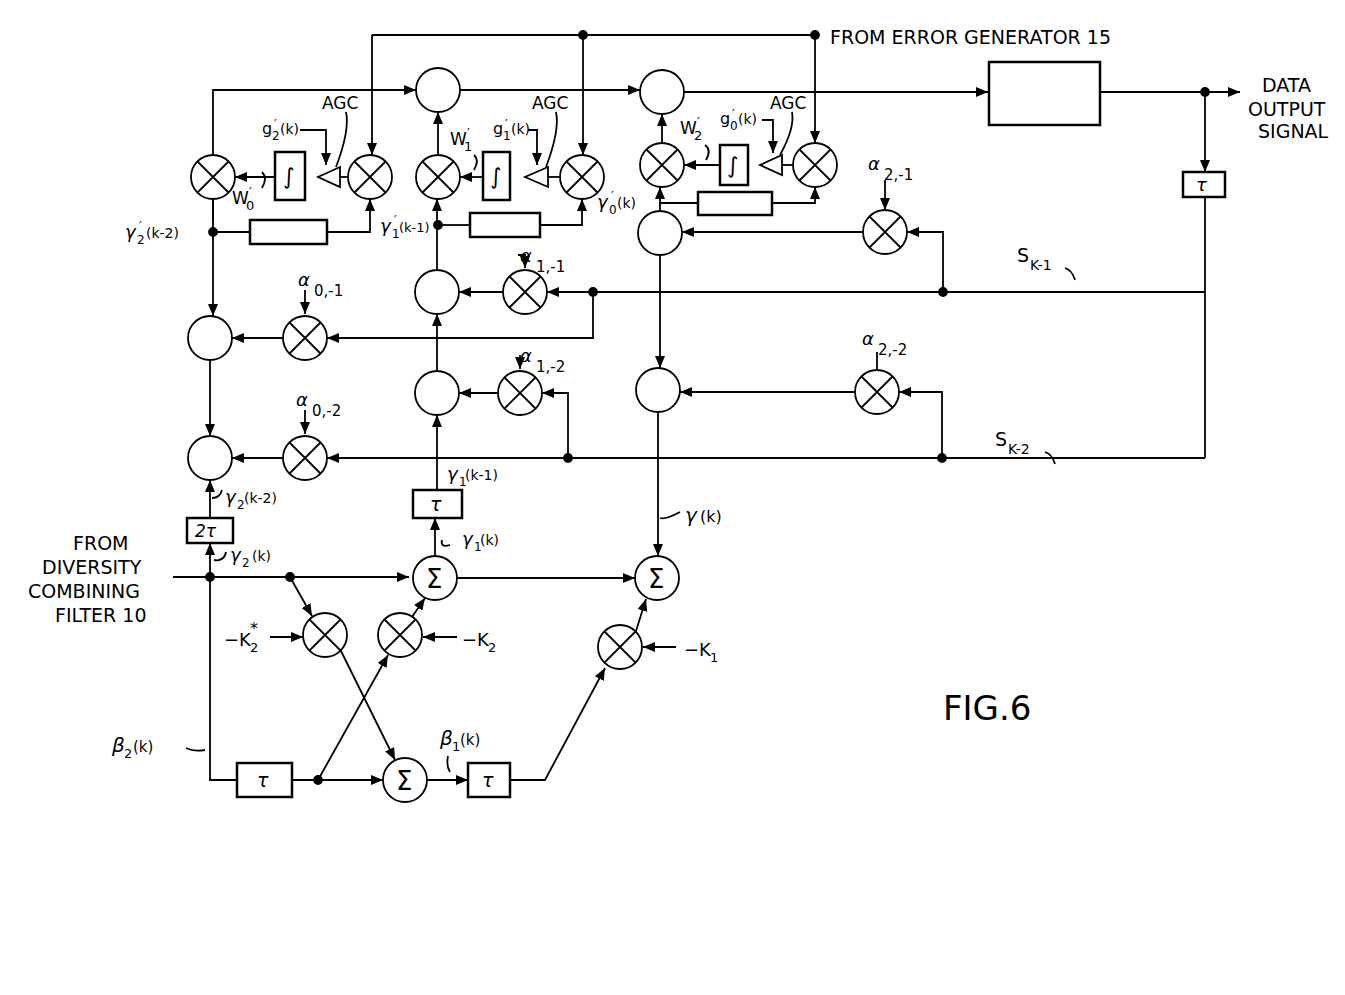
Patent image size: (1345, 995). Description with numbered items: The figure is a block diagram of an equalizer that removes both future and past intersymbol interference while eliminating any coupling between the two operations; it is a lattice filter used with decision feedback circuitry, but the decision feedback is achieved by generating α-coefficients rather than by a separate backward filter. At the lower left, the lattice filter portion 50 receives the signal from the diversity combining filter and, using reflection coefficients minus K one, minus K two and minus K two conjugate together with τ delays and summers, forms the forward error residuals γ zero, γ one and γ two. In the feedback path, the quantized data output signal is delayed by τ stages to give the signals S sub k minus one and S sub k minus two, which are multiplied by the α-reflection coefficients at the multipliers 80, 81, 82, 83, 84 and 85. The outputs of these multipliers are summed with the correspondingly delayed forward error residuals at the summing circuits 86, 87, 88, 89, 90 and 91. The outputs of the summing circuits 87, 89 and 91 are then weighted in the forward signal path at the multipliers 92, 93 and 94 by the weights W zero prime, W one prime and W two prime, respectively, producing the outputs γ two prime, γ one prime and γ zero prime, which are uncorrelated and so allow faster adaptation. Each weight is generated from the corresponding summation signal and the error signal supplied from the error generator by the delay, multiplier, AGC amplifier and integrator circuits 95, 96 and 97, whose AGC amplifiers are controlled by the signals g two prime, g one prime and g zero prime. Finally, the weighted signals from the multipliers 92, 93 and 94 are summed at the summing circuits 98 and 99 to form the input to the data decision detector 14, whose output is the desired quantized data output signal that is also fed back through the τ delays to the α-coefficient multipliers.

The data decision detector 14 is at (1100, 72).
The lattice filter portion 50 is at (615, 733).
The multiplier 80 is at (324, 328).
The multiplier 81 is at (320, 446).
The multiplier 82 is at (510, 308).
The multiplier 83 is at (502, 382).
The multiplier 84 is at (903, 220).
The multiplier 85 is at (861, 407).
The summing circuit 86 is at (190, 446).
The summing circuit 87 is at (226, 322).
The summing circuit 88 is at (418, 382).
The summing circuit 89 is at (448, 277).
The summing circuit 90 is at (676, 378).
The summing circuit 91 is at (678, 248).
The multiplier 92 is at (197, 164).
The multiplier 93 is at (422, 162).
The multiplier 94 is at (645, 152).
The delay, multiplier, AGC amplifier and integrator circuit 95 is at (330, 236).
The delay, multiplier, AGC amplifier and integrator circuit 96 is at (558, 232).
The delay, multiplier, AGC amplifier and integrator circuit 97 is at (778, 220).
The summing circuit 98 is at (456, 78).
The summing circuit 99 is at (680, 77).